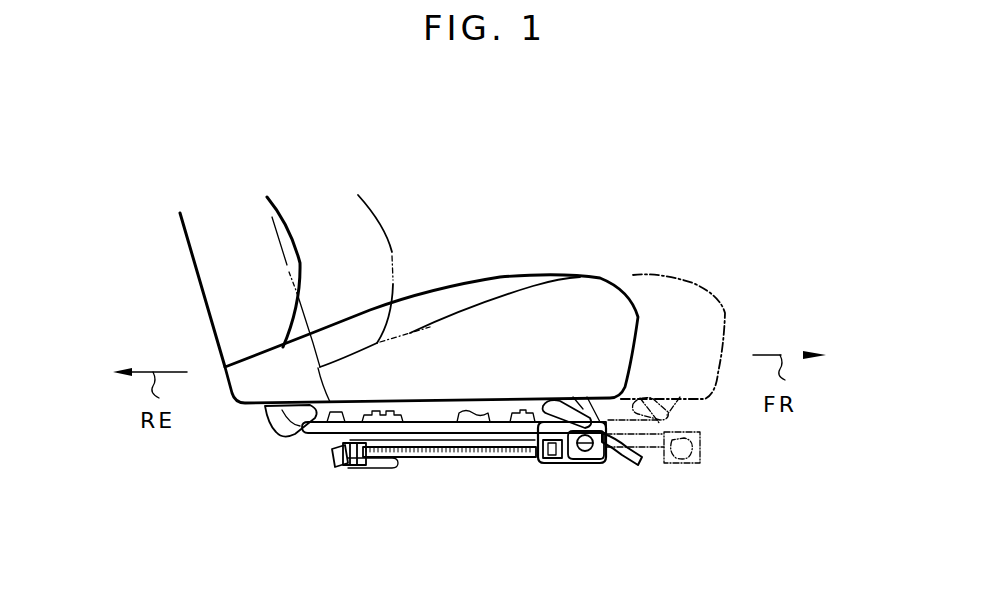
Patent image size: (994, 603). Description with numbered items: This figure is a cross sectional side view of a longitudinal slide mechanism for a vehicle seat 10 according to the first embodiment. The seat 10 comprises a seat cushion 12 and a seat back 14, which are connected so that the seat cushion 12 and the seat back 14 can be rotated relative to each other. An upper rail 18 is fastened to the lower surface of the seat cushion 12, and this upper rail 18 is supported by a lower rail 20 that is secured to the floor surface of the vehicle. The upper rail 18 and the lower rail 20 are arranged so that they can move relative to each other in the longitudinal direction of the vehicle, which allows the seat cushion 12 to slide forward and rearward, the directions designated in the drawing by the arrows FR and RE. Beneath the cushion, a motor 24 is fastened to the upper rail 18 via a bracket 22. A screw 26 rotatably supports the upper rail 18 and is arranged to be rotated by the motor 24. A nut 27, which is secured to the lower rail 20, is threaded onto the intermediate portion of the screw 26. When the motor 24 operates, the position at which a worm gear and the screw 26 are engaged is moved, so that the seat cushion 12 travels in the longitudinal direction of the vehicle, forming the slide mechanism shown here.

The seat 10 is at (638, 170).
The seat cushion 12 is at (475, 278).
The seat back 14 is at (283, 222).
The upper rail 18 is at (426, 418).
The lower rail 20 is at (435, 442).
The bracket 22 is at (618, 430).
The motor 24 is at (583, 447).
The screw 26 is at (501, 455).
The nut 27 is at (553, 458).